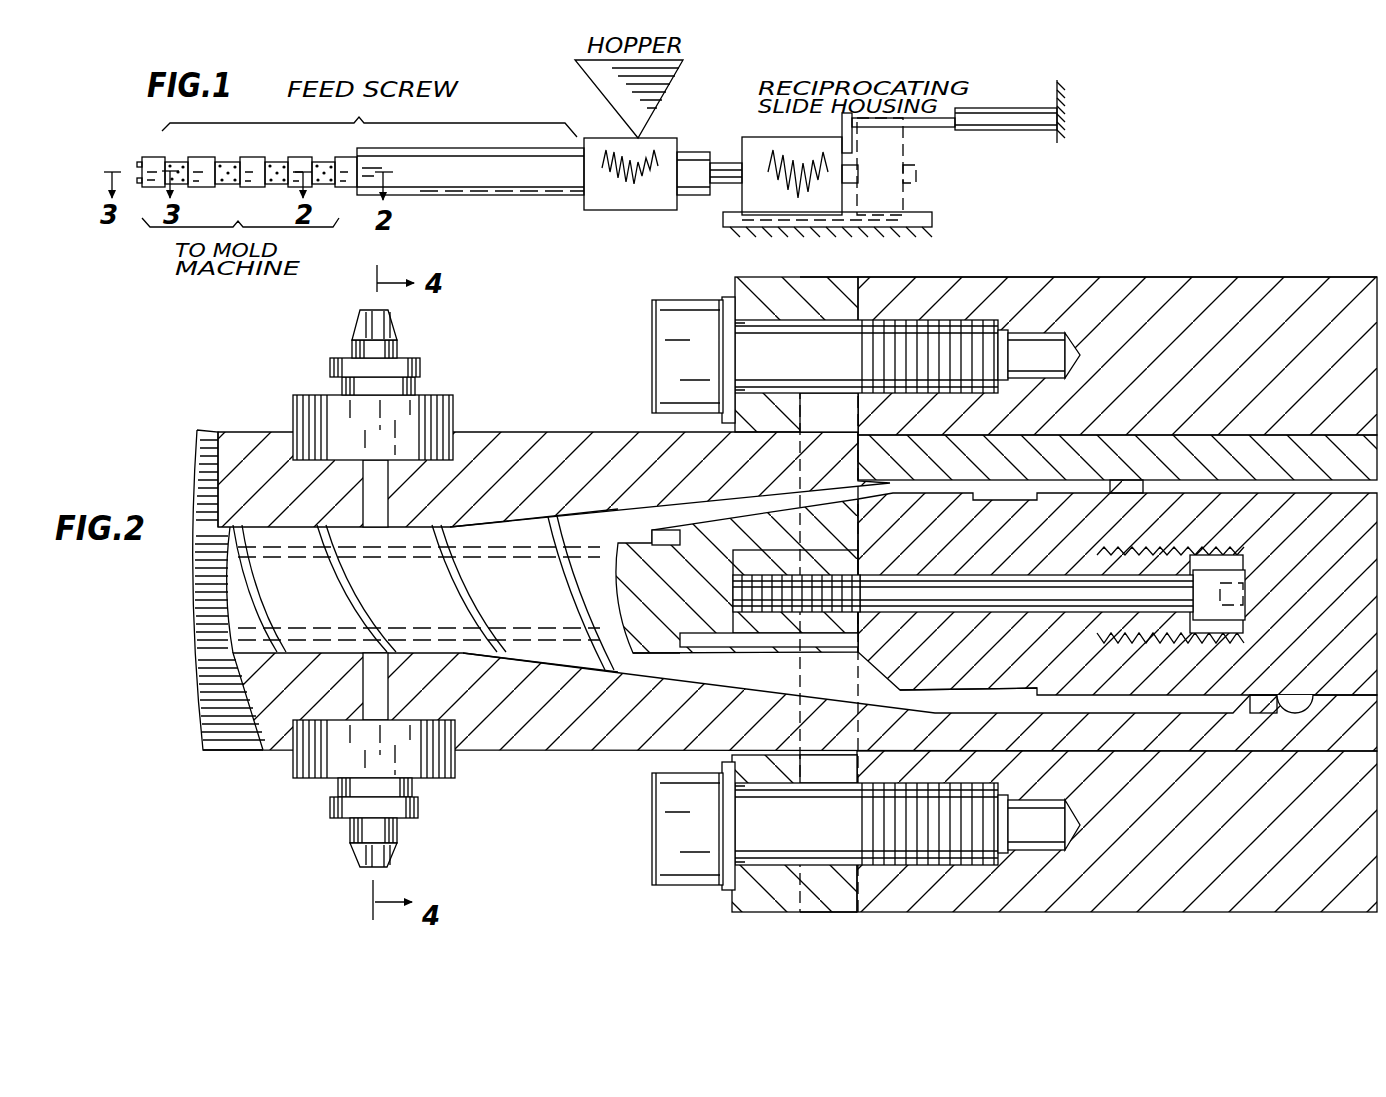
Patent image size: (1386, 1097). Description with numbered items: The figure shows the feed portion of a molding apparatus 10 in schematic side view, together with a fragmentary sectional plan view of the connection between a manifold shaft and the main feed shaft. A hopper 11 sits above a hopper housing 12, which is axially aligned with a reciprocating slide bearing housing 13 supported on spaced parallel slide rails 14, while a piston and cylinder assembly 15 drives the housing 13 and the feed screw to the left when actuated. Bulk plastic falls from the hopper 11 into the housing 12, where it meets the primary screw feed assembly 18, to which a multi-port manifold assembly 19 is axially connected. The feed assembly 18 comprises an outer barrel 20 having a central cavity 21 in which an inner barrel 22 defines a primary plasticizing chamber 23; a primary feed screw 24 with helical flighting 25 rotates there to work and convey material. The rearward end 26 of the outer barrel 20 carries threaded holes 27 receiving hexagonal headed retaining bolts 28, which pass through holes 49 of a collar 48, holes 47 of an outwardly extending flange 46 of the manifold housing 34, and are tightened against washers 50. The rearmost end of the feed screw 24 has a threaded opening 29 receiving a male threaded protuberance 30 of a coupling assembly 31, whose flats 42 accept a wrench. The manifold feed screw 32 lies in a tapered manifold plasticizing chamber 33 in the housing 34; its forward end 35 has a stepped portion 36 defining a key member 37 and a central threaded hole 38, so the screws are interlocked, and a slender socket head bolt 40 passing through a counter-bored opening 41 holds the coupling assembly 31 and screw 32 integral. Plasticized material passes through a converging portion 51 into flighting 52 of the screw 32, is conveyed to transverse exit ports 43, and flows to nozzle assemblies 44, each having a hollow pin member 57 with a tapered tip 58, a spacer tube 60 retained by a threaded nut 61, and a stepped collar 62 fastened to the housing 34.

In FIG. 1, the molding apparatus 10 is at (567, 212).
In FIG. 1, the hopper 11 is at (668, 86).
In FIG. 1, the hopper housing 12 is at (620, 202).
In FIG. 1, the reciprocating slide bearing housing 13 is at (737, 137).
In FIG. 1, the slide rails 14 is at (930, 218).
In FIG. 1, the piston and cylinder assembly 15 is at (957, 127).
In FIG. 1, the primary screw feed assembly 18 is at (470, 147).
In FIG. 2, the primary screw feed assembly 18 is at (1288, 270).
In FIG. 1, the multi-port manifold assembly 19 is at (235, 157).
In FIG. 2, the multi-port manifold assembly 19 is at (210, 773).
In FIG. 1, the outer barrel 20 is at (520, 188).
In FIG. 2, the outer barrel 20 is at (1152, 288).
In FIG. 2, the central cavity 21 is at (1345, 443).
In FIG. 2, the inner barrel 22 is at (1310, 740).
In FIG. 2, the primary plasticizing chamber 23 is at (1312, 698).
In FIG. 2, the primary feed screw 24 is at (1345, 556).
In FIG. 2, the flighting 25 is at (1130, 478).
In FIG. 2, the rearward end 26 is at (855, 915).
In FIG. 2, the threaded holes 27 is at (902, 330).
In FIG. 2, the hexagonal headed retaining bolts 28 is at (662, 380).
In FIG. 2, the threaded opening 29 is at (1120, 557).
In FIG. 2, the male threaded protuberance 30 is at (1178, 547).
In FIG. 2, the coupling assembly 31 is at (1058, 675).
In FIG. 2, the manifold feed screw 32 is at (232, 556).
In FIG. 2, the manifold plasticizing chamber 33 is at (227, 623).
In FIG. 2, the manifold housing 34 is at (505, 445).
In FIG. 2, the forward end 35 is at (668, 525).
In FIG. 2, the stepped portion 36 is at (752, 563).
In FIG. 2, the key member 37 is at (693, 640).
In FIG. 2, the central threaded hole 38 is at (757, 648).
In FIG. 2, the socket head bolt 40 is at (937, 595).
In FIG. 2, the counter-bored opening 41 is at (1015, 580).
In FIG. 2, the flats 42 is at (997, 690).
In FIG. 2, the transverse exit ports 43 is at (367, 465).
In FIG. 2, the nozzle assembly 44 is at (367, 616).
In FIG. 2, the outwardly extending flange 46 is at (817, 315).
In FIG. 2, the holes 47 is at (846, 398).
In FIG. 2, the collar 48 is at (755, 284).
In FIG. 2, the holes 49 is at (750, 330).
In FIG. 2, the washers 50 is at (727, 347).
In FIG. 2, the converging portion 51 is at (573, 662).
In FIG. 2, the flighting 52 is at (258, 585).
In FIG. 2, the hollow pin member 57 is at (360, 348).
In FIG. 2, the tapered tip 58 is at (390, 325).
In FIG. 2, the spacer tube 60 is at (345, 387).
In FIG. 2, the threaded nut 61 is at (330, 365).
In FIG. 2, the stepped collar 62 is at (425, 400).